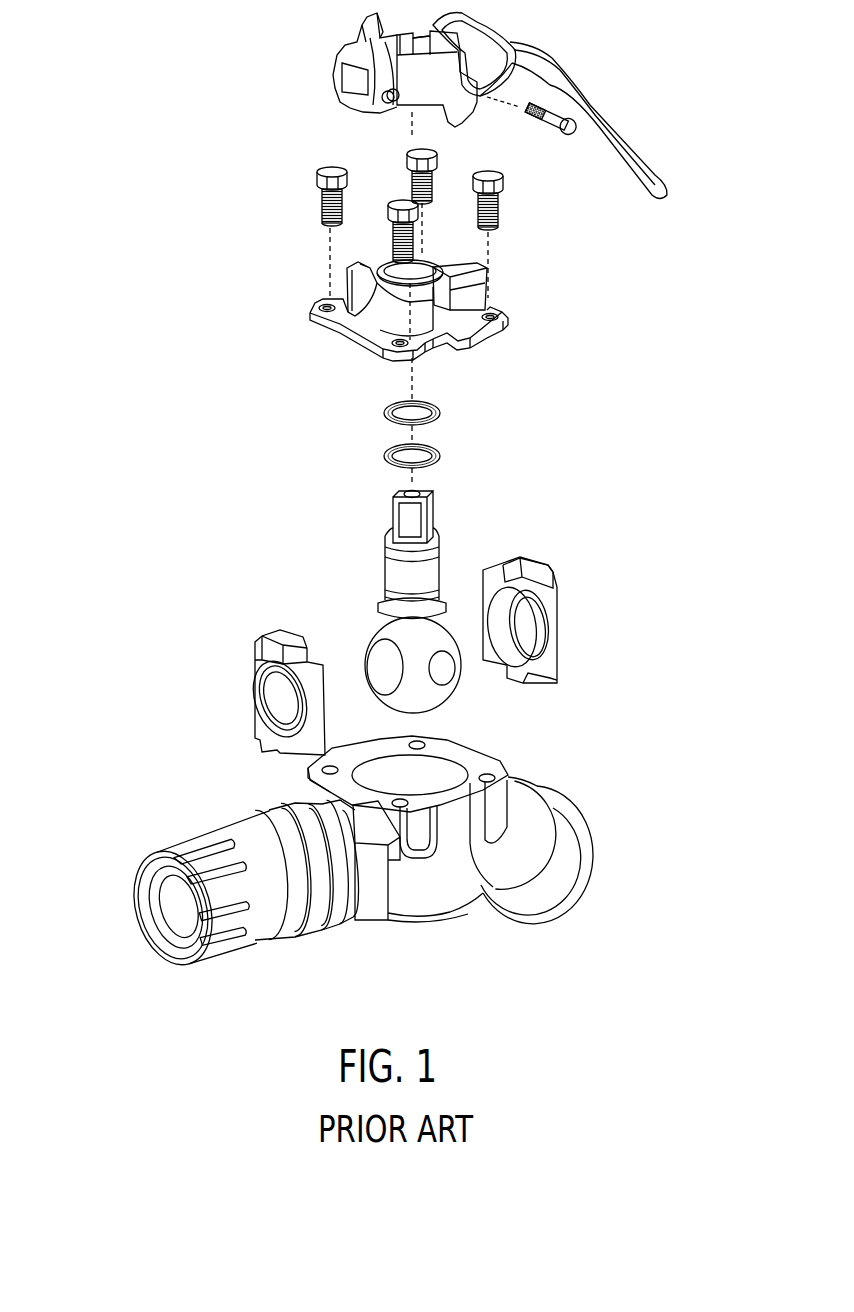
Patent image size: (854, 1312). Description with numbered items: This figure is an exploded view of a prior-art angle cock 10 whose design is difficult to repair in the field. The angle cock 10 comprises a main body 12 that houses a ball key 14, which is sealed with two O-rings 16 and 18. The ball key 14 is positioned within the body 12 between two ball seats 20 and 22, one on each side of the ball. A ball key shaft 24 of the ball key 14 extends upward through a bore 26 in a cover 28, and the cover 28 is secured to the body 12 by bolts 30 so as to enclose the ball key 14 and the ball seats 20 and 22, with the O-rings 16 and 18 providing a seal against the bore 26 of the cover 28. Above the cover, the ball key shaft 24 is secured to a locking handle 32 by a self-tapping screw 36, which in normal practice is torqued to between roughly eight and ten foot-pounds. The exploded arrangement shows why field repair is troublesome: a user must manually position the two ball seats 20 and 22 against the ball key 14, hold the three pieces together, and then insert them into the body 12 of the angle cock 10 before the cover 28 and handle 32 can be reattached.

The angle cock 10 is at (132, 171).
The main body 12 is at (538, 789).
The ball key 14 is at (353, 570).
The O-ring 16 is at (383, 456).
The O-ring 18 is at (383, 413).
The ball seat 20 is at (255, 657).
The ball seat 22 is at (557, 593).
The ball key shaft 24 is at (442, 555).
The bore 26 is at (430, 251).
The cover 28 is at (487, 294).
The bolts 30 is at (318, 212).
The locking handle 32 is at (668, 178).
The self-tapping screw 36 is at (555, 135).